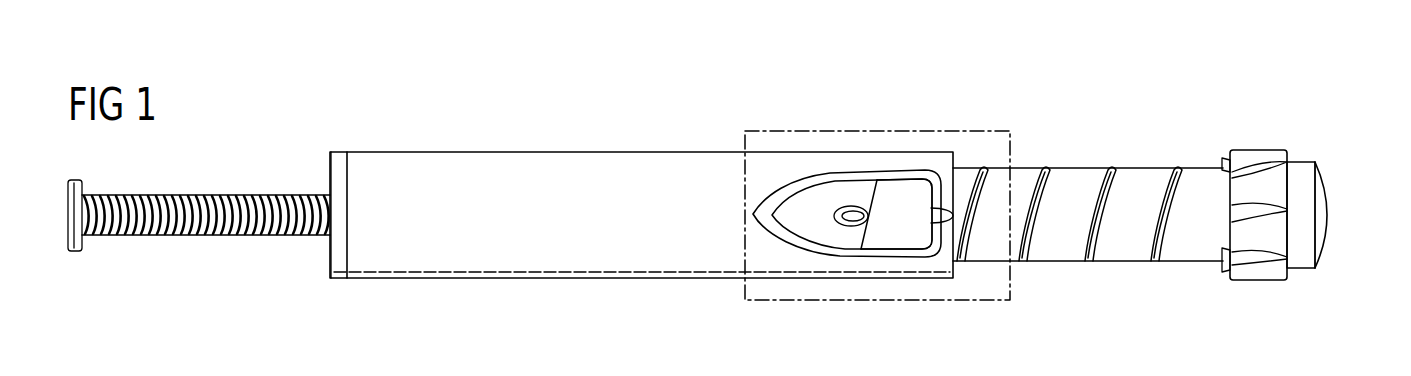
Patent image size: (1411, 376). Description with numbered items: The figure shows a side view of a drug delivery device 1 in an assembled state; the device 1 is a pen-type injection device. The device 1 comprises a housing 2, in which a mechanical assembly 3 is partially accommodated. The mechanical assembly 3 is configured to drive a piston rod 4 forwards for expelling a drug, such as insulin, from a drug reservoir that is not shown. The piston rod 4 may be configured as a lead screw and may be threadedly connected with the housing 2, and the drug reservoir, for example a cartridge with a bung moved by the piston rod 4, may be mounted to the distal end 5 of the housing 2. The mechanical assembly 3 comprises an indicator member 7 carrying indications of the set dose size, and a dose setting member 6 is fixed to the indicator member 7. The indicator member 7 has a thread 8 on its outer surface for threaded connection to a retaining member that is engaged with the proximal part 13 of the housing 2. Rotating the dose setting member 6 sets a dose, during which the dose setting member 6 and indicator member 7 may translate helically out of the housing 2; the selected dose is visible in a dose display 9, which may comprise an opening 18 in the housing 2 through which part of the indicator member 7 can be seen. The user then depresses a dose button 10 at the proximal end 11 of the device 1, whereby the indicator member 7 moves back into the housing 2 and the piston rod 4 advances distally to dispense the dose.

The drug delivery device 1 is at (480, 102).
The housing 2 is at (583, 263).
The mechanical assembly 3 is at (1142, 148).
The piston rod 4 is at (212, 200).
The distal end 5 is at (334, 168).
The dose setting member 6 is at (1258, 188).
The indicator member 7 is at (1127, 243).
The thread 8 is at (1088, 232).
The dose display 9 is at (885, 243).
The dose button 10 is at (1320, 207).
The proximal end 11 is at (1327, 285).
The proximal part 13 is at (966, 151).
The opening 18 is at (908, 243).